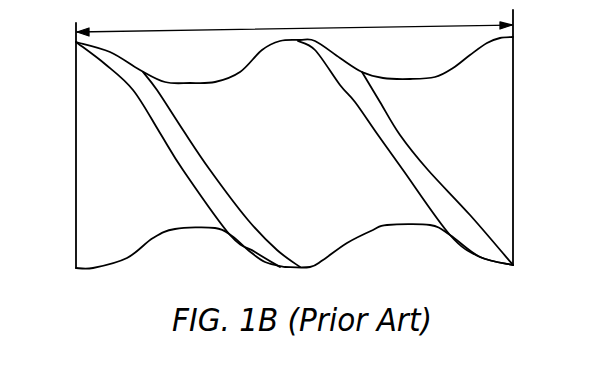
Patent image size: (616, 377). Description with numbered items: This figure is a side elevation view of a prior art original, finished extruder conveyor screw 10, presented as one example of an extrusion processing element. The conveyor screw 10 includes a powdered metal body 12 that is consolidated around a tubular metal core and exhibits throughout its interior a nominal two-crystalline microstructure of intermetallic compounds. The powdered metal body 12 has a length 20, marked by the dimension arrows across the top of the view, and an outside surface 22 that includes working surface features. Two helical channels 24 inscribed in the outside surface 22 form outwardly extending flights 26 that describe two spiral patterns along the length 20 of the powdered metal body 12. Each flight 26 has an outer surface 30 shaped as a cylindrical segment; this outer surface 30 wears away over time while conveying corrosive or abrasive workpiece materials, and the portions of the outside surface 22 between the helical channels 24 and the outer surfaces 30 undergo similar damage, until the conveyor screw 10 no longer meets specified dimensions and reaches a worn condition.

The conveyor screw 10 is at (540, 79).
The powdered metal body 12 is at (514, 248).
The length 20 is at (342, 26).
The outside surface 22 is at (498, 138).
The helical channels 24 is at (179, 212).
The flights 26 is at (158, 132).
The outer surface 30 is at (196, 165).